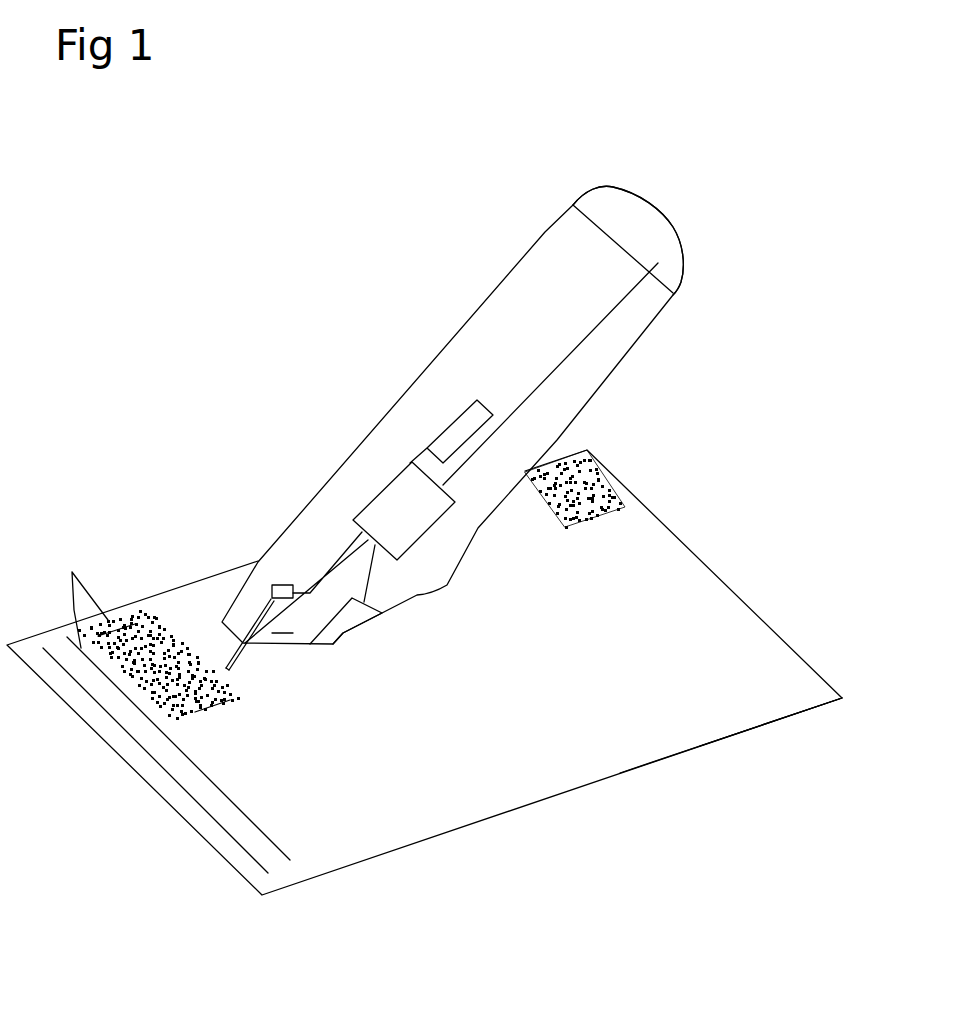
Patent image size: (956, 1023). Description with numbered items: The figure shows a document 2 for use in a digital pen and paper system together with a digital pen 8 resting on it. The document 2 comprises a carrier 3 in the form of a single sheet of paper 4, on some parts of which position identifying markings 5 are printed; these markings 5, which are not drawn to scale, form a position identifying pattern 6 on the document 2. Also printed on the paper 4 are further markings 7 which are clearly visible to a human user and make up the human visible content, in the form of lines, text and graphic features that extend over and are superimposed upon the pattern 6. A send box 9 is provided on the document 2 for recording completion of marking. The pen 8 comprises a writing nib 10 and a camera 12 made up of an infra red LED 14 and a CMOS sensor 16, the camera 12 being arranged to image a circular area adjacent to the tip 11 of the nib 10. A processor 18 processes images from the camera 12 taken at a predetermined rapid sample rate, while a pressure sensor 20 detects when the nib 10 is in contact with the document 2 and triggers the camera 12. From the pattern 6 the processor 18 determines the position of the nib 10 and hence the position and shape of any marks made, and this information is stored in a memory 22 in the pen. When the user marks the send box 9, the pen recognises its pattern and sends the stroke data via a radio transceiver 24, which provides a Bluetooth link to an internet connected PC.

The document 2 is at (788, 688).
The carrier 3 is at (660, 733).
The sheet of paper 4 is at (703, 720).
The position identifying markings 5 is at (122, 623).
The position identifying pattern 6 is at (132, 627).
The further markings 7 is at (86, 591).
The pen 8 is at (480, 302).
The send box 9 is at (607, 483).
The writing nib 10 is at (233, 634).
The tip 11 is at (227, 668).
The camera 12 is at (372, 630).
The infra red LED 14 is at (343, 638).
The CMOS sensor 16 is at (278, 634).
The processor 18 is at (443, 518).
The pressure sensor 20 is at (273, 586).
The memory 22 is at (452, 418).
The radio transceiver 24 is at (590, 193).